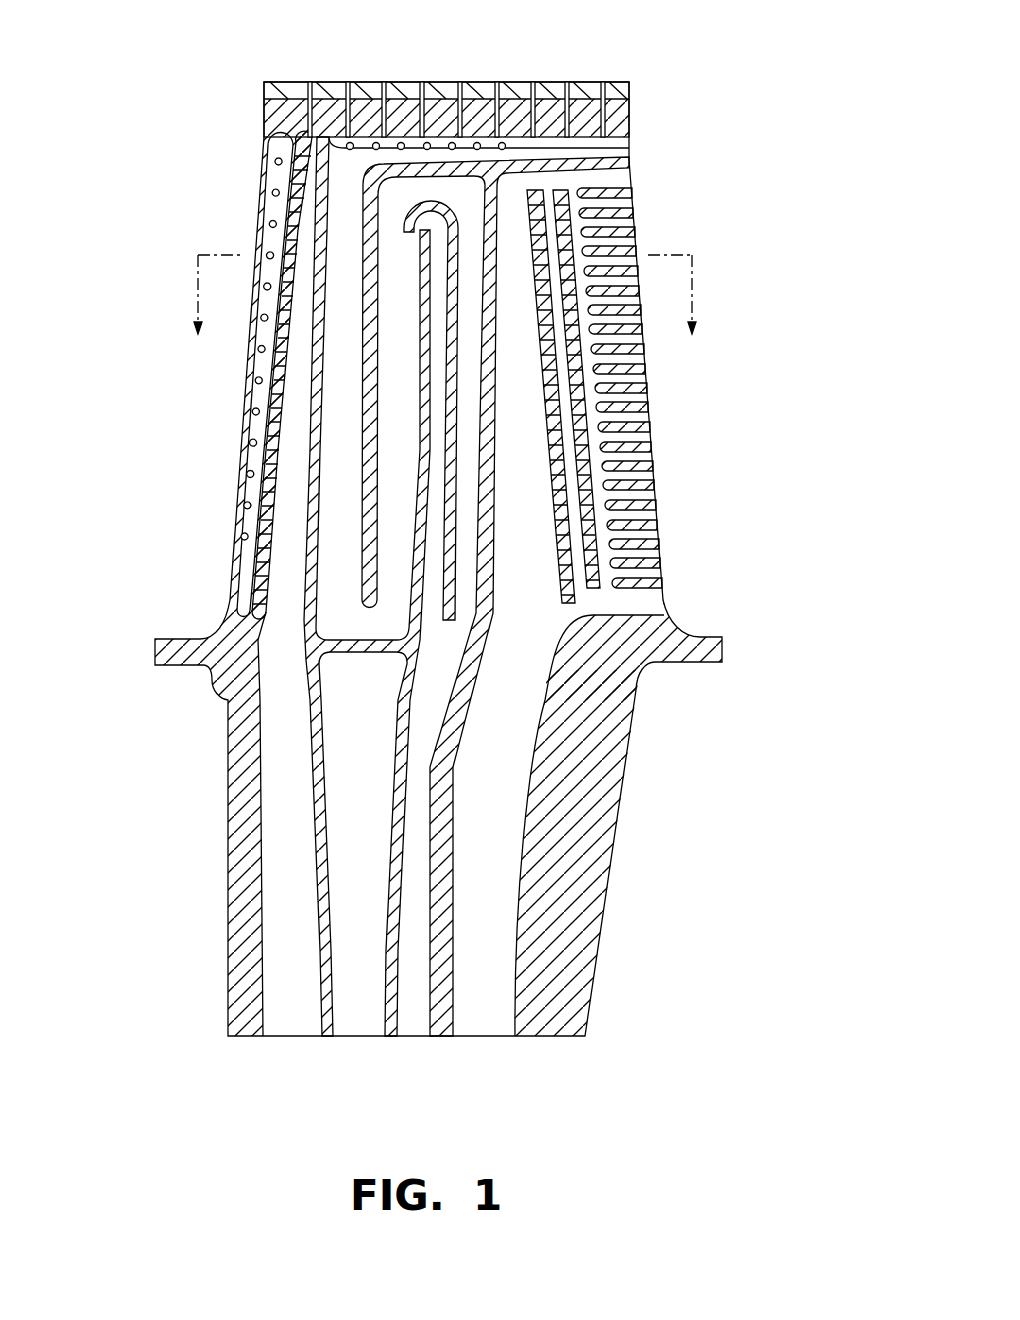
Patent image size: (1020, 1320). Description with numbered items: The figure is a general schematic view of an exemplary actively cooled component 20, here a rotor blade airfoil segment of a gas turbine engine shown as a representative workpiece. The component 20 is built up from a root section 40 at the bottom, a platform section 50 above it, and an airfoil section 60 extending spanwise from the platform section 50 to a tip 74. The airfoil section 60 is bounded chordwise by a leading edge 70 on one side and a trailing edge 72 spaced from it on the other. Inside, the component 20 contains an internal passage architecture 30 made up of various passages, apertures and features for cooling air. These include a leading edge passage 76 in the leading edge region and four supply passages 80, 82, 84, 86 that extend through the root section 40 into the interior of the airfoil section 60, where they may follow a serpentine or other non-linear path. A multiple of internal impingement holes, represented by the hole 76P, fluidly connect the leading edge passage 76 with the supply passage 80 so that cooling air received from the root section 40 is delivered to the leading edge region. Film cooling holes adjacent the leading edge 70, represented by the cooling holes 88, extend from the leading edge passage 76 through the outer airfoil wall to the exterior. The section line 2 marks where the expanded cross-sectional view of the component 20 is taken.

The component 20 is at (653, 108).
The internal passage architecture 30 is at (356, 738).
The root section 40 is at (219, 932).
The platform section 50 is at (142, 652).
The airfoil section 60 is at (207, 423).
The leading edge 70 is at (255, 163).
The trailing edge 72 is at (630, 183).
The tip 74 is at (400, 82).
The leading edge passage 76 is at (248, 570).
The hole 76P is at (300, 168).
The supply passage 80 is at (298, 1022).
The supply passage 82 is at (357, 1022).
The supply passage 84 is at (415, 1026).
The supply passage 86 is at (480, 1024).
The cooling holes 88 is at (272, 223).
The line 2- 2 is at (447, 317).